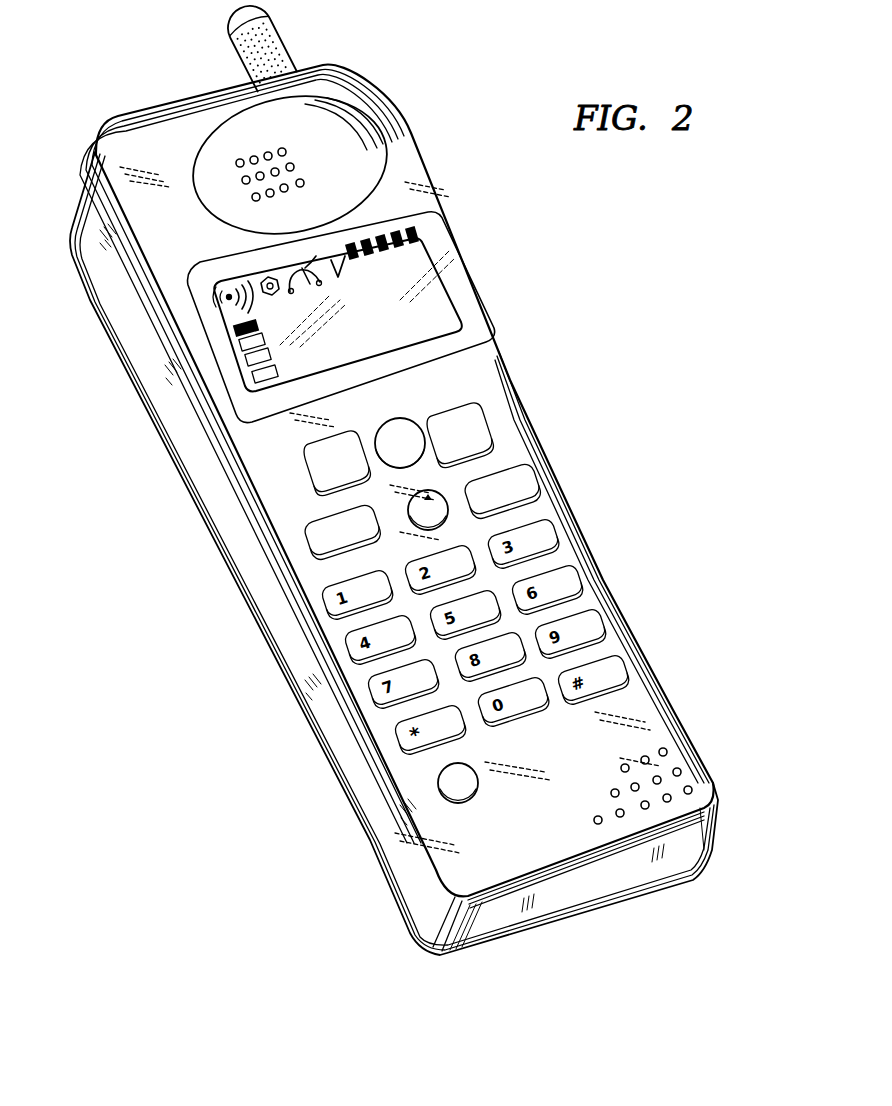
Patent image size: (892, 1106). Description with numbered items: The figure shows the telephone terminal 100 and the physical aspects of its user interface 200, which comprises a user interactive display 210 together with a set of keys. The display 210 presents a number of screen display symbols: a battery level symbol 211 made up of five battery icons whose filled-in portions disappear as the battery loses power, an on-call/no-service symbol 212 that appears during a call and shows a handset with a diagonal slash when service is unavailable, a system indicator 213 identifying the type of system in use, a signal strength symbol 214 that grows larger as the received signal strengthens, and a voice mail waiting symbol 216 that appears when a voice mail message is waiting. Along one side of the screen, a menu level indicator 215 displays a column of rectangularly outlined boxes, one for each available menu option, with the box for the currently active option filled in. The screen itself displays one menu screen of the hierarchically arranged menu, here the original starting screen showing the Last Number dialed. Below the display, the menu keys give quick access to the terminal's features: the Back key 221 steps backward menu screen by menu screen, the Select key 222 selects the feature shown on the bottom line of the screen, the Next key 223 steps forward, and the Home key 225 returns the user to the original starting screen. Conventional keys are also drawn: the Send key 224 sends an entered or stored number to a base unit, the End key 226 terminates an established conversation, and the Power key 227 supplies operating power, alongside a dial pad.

The telephone terminal 100 is at (142, 47).
The user interface 200 is at (508, 188).
The user interactive display 210 is at (440, 293).
The battery level symbol 211 is at (402, 242).
The on-call/no-service symbol 212 is at (298, 265).
The system indicator 213 is at (260, 284).
The signal strength symbol 214 is at (222, 298).
The menu level indicator 215 is at (233, 388).
The voice mail waiting symbol 216 is at (343, 258).
The Back key 221 is at (318, 478).
The Select key 222 is at (388, 427).
The Next key 223 is at (462, 415).
The Send key 224 is at (338, 532).
The Home key 225 is at (442, 502).
The End key 226 is at (522, 497).
The Power key 227 is at (438, 788).